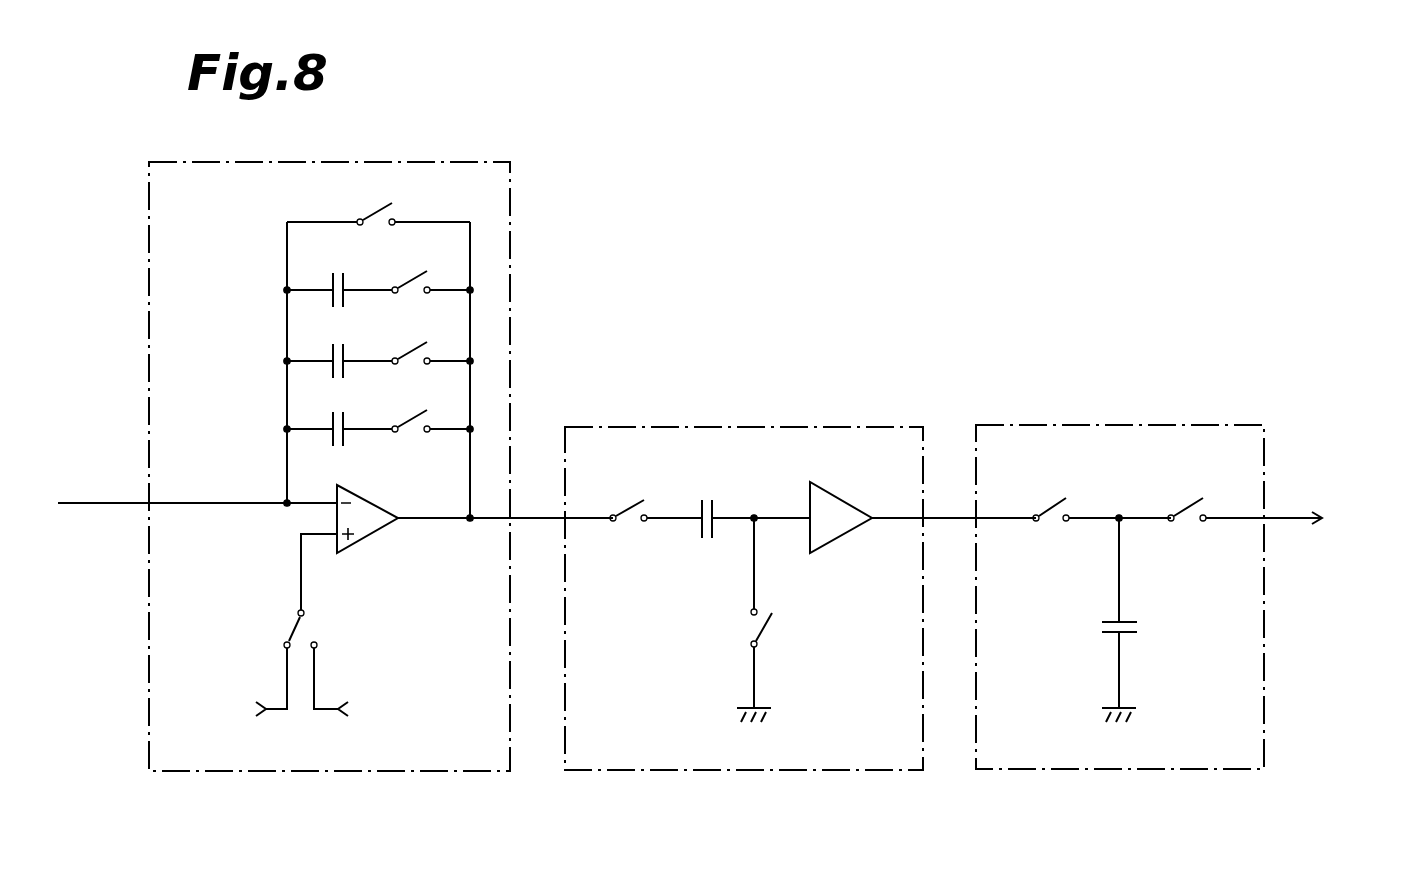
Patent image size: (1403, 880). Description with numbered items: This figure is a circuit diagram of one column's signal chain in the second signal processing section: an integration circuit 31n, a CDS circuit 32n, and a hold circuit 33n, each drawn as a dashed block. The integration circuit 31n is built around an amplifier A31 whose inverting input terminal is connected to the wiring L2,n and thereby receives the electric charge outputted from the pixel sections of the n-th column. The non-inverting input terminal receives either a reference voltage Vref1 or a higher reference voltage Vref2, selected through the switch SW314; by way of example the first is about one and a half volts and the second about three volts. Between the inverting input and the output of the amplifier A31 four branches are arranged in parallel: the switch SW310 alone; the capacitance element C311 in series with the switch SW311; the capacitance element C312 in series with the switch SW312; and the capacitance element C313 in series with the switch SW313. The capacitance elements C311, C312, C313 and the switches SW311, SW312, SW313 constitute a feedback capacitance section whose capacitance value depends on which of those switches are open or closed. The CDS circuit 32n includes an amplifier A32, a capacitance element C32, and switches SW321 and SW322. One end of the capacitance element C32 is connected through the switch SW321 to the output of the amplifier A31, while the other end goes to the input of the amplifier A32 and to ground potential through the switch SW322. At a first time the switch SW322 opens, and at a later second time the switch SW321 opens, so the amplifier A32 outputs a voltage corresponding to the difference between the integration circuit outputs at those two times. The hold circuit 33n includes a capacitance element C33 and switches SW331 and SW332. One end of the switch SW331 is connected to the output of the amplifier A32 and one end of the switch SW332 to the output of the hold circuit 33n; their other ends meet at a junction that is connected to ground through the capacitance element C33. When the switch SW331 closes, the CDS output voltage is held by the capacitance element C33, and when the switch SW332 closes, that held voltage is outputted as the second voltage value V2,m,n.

The integration circuit 31n is at (421, 771).
The CDS circuit 32n is at (845, 770).
The hold circuit 33n is at (1208, 769).
The wiring L2,n is at (80, 502).
The second voltage value V2,m,n is at (1364, 515).
The switch SW310 is at (378, 235).
The capacitance element C311 is at (339, 305).
The switch SW311 is at (420, 304).
The capacitance element C312 is at (339, 376).
The switch SW312 is at (420, 375).
The capacitance element C313 is at (339, 443).
The switch SW313 is at (420, 442).
The amplifier A31 is at (475, 525).
The switch SW314 is at (263, 591).
The reference voltage Vref1 is at (238, 685).
The reference voltage Vref2 is at (361, 685).
The switch SW321 is at (646, 531).
The capacitance element C32 is at (745, 503).
The amplifier A32 is at (923, 522).
The switch SW322 is at (714, 620).
The switch SW331 is at (1091, 530).
The switch SW332 is at (1235, 530).
The capacitance element C33 is at (1146, 620).